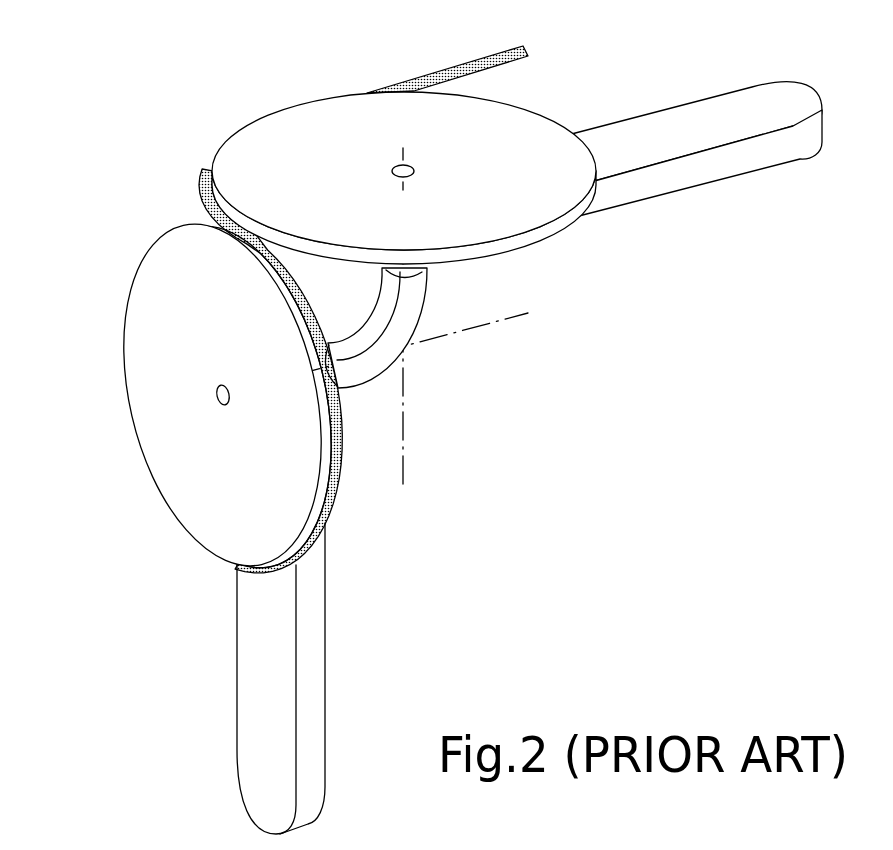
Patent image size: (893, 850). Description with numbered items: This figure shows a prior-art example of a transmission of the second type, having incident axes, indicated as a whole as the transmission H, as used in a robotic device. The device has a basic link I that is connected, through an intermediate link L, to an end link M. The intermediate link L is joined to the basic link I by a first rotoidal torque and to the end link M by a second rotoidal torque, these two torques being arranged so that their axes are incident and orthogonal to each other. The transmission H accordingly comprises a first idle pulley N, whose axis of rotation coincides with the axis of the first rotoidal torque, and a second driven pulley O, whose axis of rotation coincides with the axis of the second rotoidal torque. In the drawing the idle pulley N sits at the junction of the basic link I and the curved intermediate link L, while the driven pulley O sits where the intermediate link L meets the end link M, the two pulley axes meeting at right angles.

The transmission with incident axes H is at (429, 425).
The first idle pulley N is at (530, 120).
The basic link I is at (680, 120).
The second driven pulley O is at (190, 463).
The intermediate link L is at (376, 328).
The end link M is at (325, 613).